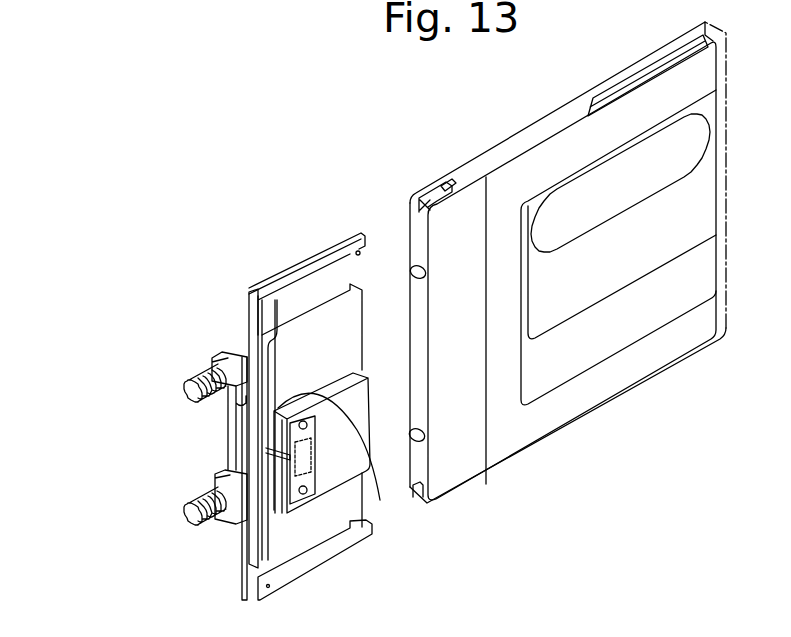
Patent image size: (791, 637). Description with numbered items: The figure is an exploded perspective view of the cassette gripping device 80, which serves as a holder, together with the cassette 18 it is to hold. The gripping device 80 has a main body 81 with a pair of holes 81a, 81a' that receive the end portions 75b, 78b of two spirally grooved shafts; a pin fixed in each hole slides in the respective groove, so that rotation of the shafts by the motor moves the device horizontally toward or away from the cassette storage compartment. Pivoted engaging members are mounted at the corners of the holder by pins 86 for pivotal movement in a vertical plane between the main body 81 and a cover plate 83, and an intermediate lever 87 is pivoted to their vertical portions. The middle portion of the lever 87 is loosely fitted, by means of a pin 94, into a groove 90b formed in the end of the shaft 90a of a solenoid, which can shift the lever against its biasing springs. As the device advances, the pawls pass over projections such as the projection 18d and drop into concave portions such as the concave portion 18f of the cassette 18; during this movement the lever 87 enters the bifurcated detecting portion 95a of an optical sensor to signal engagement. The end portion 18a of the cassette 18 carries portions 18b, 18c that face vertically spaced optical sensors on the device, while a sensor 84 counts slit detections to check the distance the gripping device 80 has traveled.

The cassette 18 is at (565, 283).
The end portion of cassette 18a is at (418, 344).
The portion on end of cassette 18b is at (421, 278).
The portion on end of cassette 18c is at (424, 445).
The projection 18d is at (411, 203).
The concave portion 18f is at (449, 182).
The end portion of shaft 75b is at (214, 378).
The end portion of shaft 78b is at (206, 530).
The cassette gripping device 80 is at (300, 268).
The main body 81 is at (251, 292).
The hole 81a is at (221, 324).
The hole 81a' is at (220, 547).
The cover plate 83 is at (330, 315).
The sensor 84 is at (238, 440).
The pin 86 is at (273, 303).
The intermediate lever 87 is at (262, 421).
The shaft of solenoid 90a is at (262, 400).
The groove 90b is at (290, 408).
The pin 94 is at (290, 498).
The bifurcated detecting portion 95a is at (380, 500).